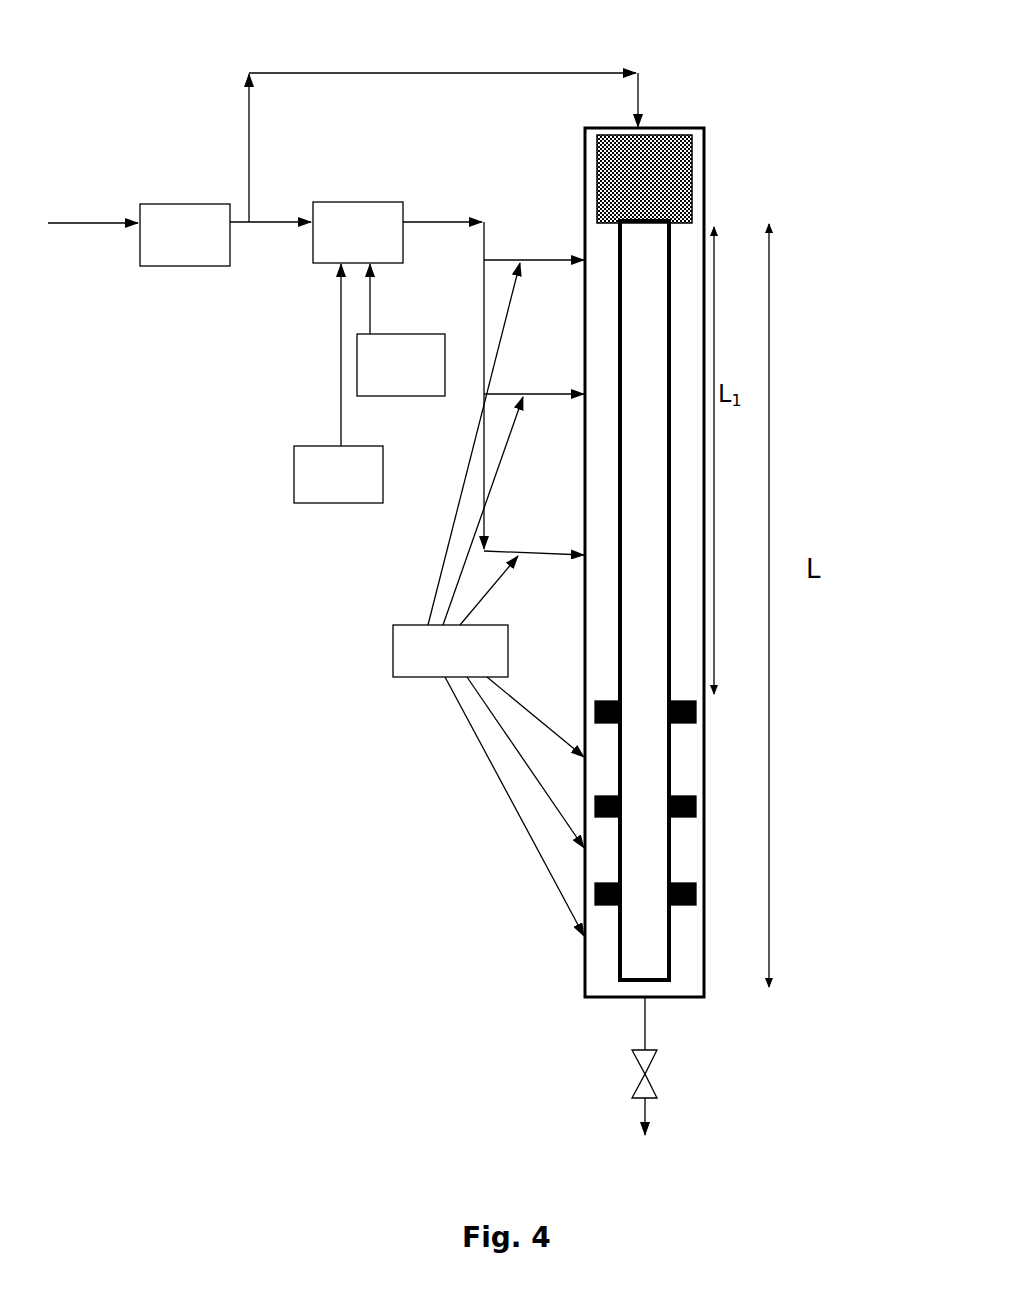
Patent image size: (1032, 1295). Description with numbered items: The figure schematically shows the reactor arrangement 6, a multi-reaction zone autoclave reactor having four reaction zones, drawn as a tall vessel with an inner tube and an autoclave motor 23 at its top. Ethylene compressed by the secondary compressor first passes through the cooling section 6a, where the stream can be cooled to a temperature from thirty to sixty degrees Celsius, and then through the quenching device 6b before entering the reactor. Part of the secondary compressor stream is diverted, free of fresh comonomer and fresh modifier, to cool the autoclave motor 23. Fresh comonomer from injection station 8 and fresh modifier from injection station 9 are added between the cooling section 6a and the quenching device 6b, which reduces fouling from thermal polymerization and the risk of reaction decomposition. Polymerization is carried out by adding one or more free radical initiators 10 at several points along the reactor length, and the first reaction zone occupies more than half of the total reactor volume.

The reactor arrangement 6 is at (742, 569).
The cooling section 6a is at (185, 235).
The quenching device 6b is at (358, 232).
The comonomer injection station 8 is at (338, 474).
The modifier injection station 9 is at (401, 365).
The free radical initiators 10 is at (488, 599).
The autoclave motor 23 is at (644, 179).